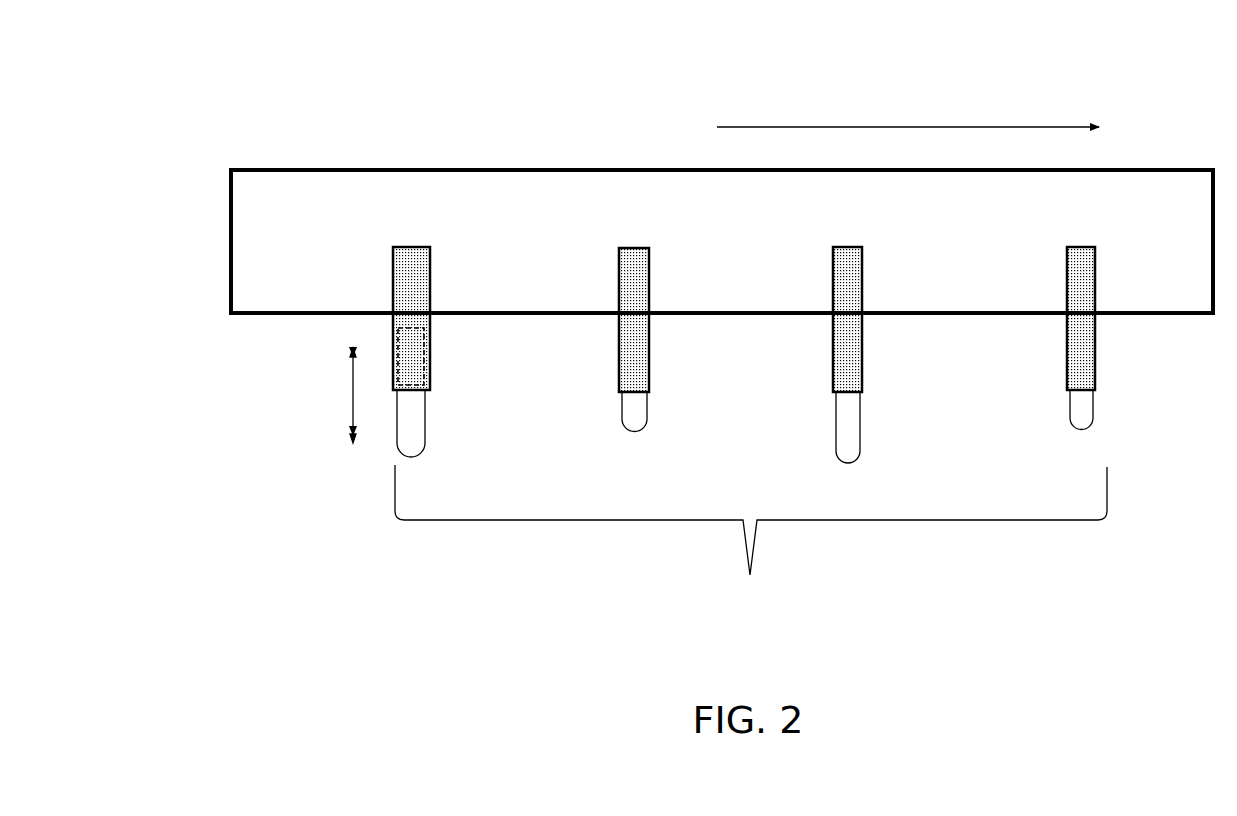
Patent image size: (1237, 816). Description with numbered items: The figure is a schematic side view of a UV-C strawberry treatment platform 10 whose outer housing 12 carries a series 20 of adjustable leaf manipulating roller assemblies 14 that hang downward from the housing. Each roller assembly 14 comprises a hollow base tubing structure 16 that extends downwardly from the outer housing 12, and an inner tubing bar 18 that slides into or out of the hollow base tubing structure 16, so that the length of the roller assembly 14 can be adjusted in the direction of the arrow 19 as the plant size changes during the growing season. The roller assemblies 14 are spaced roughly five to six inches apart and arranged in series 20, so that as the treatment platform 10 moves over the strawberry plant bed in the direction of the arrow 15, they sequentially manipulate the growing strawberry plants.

The UV-C strawberry treatment platform 10 is at (178, 150).
The outer housing 12 is at (709, 226).
The leaf manipulating roller assembly 14 is at (298, 233).
The arrow 15 is at (908, 110).
The hollow base tubing structure 16 is at (393, 282).
The inner tubing bar 18 is at (397, 448).
The arrow 19 is at (366, 395).
The series 20 is at (751, 537).